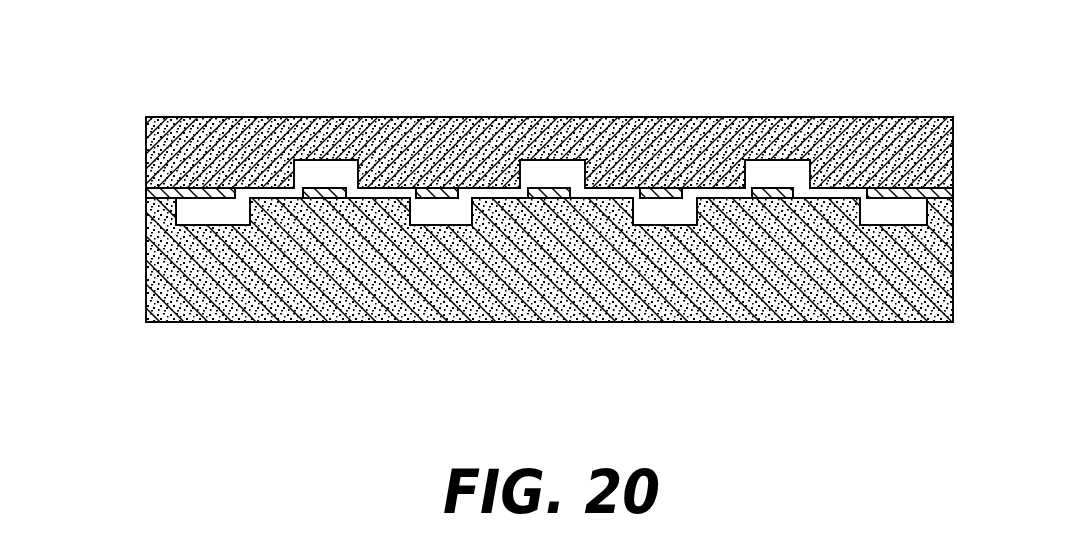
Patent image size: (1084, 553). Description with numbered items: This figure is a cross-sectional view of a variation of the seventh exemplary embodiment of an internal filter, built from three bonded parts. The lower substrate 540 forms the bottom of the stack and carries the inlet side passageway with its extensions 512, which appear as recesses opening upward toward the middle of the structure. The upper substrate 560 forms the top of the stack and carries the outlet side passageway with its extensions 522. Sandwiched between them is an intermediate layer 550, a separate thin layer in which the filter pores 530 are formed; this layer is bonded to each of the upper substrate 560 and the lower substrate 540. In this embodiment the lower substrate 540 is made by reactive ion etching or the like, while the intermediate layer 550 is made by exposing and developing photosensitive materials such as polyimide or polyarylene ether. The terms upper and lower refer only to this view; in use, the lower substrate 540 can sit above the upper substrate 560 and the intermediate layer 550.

The extensions 512 is at (427, 227).
The extensions 522 is at (757, 197).
The filter pores 530 is at (490, 188).
The lower substrate 540 is at (147, 275).
The intermediate layer 550 is at (147, 195).
The upper substrate 560 is at (147, 142).